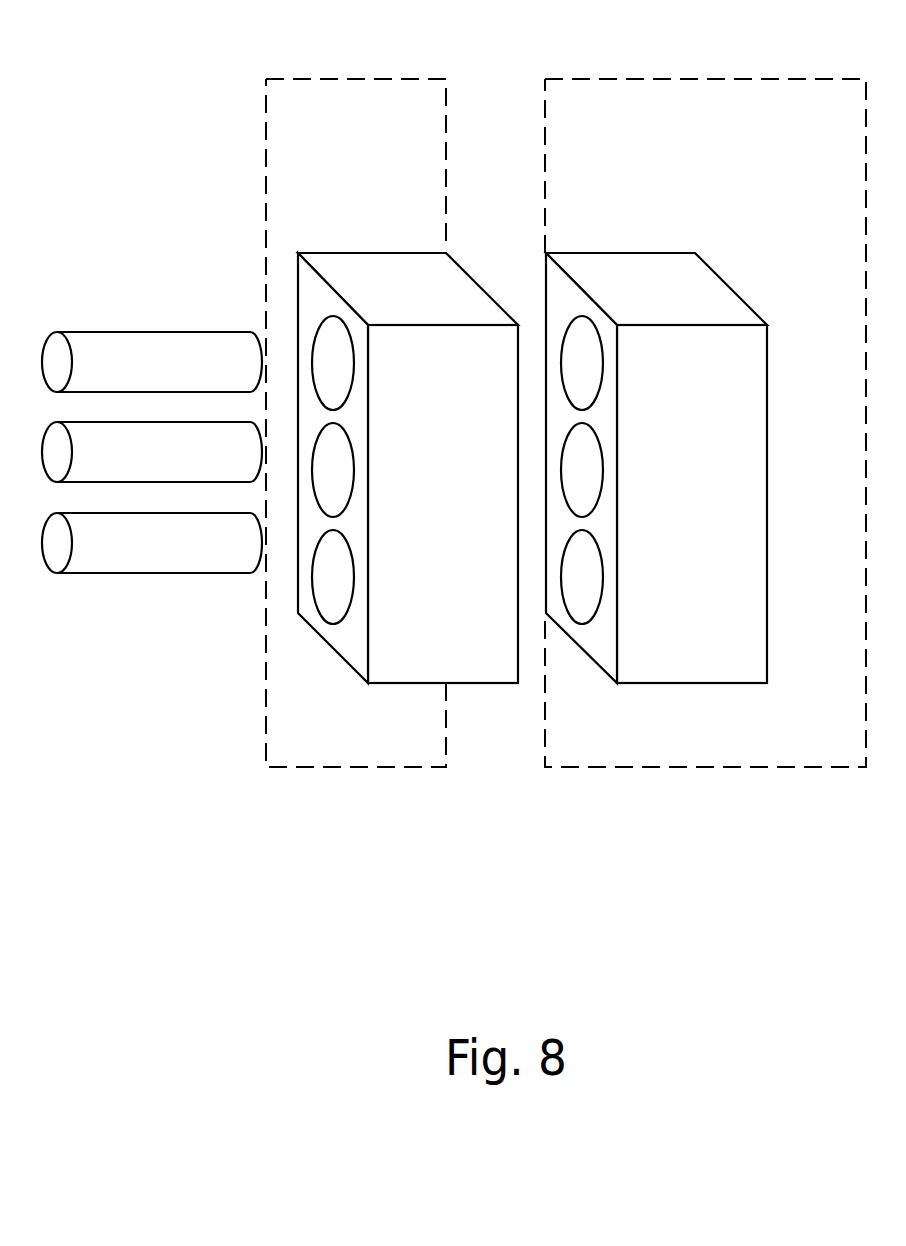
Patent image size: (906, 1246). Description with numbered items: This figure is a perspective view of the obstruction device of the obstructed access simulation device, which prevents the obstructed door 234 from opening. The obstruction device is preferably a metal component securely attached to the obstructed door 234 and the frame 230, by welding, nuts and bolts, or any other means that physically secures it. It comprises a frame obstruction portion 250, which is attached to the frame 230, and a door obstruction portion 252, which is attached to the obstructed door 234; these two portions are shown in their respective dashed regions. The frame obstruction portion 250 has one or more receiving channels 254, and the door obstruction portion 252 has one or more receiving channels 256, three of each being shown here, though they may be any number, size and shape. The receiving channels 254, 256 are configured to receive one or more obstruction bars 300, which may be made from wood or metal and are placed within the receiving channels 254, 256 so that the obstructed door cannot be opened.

The frame 230 is at (380, 768).
The obstructed door 234 is at (738, 768).
The frame obstruction portion 250 is at (344, 374).
The door obstruction portion 252 is at (633, 422).
The receiving channels 254 is at (342, 577).
The receiving channels 256 is at (580, 577).
The obstruction bars 300 is at (152, 332).